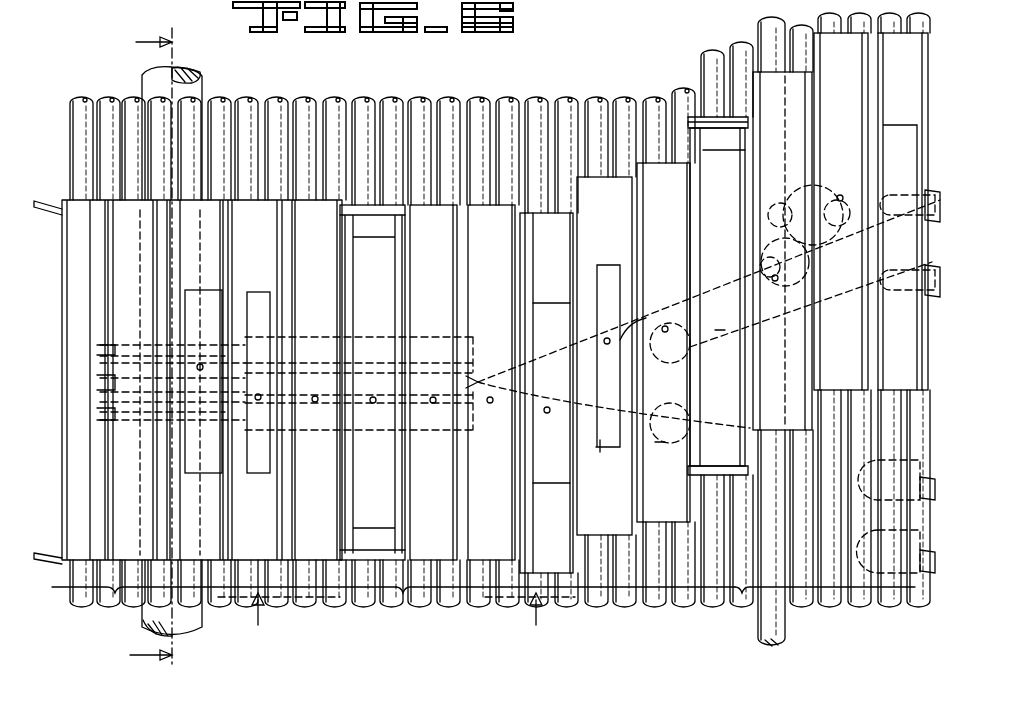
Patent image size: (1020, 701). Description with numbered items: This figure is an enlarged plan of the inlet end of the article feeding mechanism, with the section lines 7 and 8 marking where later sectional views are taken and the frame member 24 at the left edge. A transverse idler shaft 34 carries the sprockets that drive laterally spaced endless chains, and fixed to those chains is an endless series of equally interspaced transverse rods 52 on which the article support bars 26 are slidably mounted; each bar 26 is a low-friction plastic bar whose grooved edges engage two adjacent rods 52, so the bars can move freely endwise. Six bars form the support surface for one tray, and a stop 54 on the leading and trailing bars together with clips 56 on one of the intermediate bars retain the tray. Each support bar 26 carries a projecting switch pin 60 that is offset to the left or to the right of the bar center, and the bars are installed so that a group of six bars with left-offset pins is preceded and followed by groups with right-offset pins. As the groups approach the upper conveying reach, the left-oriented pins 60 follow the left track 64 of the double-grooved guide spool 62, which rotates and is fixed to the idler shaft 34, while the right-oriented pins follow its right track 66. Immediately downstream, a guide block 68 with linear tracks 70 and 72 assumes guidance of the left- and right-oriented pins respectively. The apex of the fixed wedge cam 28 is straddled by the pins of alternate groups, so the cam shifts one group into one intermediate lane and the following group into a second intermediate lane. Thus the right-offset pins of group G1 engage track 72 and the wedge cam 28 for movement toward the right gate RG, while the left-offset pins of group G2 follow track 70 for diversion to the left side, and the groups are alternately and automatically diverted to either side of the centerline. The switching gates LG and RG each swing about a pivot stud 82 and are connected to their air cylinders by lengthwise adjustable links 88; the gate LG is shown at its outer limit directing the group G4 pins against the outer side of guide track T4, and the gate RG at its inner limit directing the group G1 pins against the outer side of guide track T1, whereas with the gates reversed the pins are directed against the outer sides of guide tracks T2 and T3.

The section line 7- 7 is at (149, 353).
The section line 8- 8 is at (396, 622).
The frame bracket 24 is at (63, 575).
The article support bar 26 is at (584, 303).
The fixed wedge cam 28 is at (492, 372).
The idler shaft 34 is at (142, 78).
The transverse rods 52 is at (333, 97).
The stop 54 is at (213, 473).
The clips 56 is at (375, 215).
The switch pin 60 is at (490, 403).
The double-grooved guide spool 62 is at (203, 345).
The left track 64 is at (128, 365).
The right track 66 is at (138, 400).
The guide block 68 is at (373, 335).
The linear track 70 is at (315, 365).
The linear track 72 is at (315, 402).
The pivot stud 82 is at (788, 430).
The lengthwise adjustable link 88 is at (757, 23).
The guide track T1 is at (905, 470).
The guide track T2 is at (875, 288).
The guide track T3 is at (915, 587).
The guide track T4 is at (880, 262).
The left switching gate LG is at (722, 330).
The right switching gate RG is at (658, 442).
The group of support bars G1 is at (403, 593).
The group of support bars G2 is at (115, 593).
The group of support bars G4 is at (742, 593).